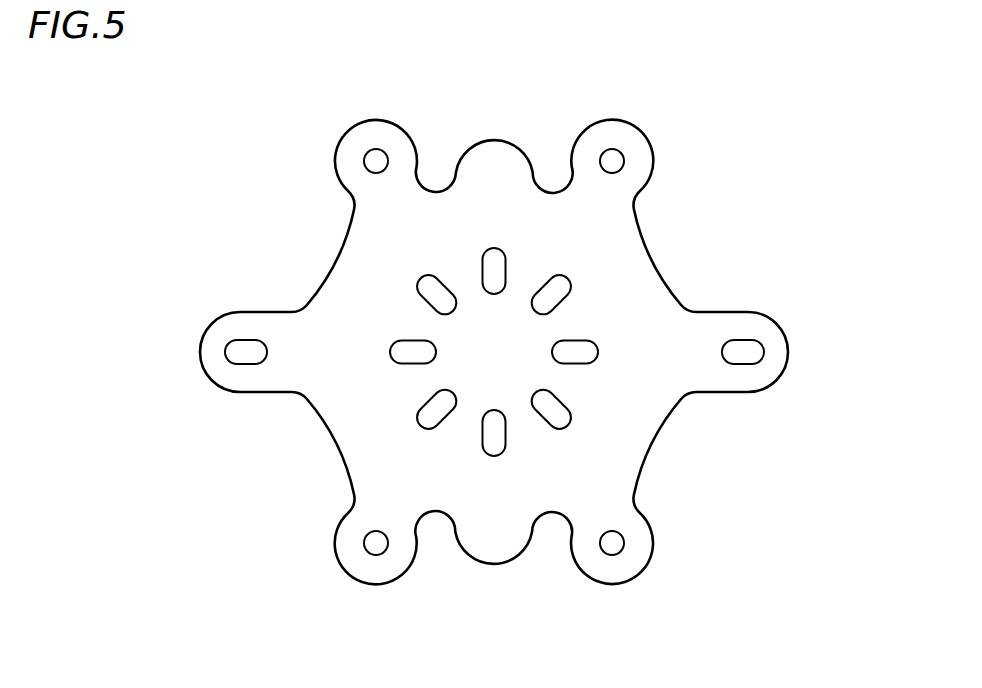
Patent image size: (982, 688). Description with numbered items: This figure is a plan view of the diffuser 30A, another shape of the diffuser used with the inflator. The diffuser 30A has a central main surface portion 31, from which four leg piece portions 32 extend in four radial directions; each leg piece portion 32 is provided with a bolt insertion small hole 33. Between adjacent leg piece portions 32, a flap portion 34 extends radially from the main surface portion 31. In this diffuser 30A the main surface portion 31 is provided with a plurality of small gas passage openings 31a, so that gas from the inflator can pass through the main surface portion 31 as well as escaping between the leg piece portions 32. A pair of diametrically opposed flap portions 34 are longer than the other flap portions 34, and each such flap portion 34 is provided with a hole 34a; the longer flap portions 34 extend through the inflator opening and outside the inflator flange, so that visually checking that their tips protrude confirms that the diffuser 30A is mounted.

The diffuser 30A is at (776, 206).
The main surface portion 31 is at (497, 370).
The small gas passage openings 31a is at (550, 295).
The leg piece portions 32 is at (346, 164).
The bolt insertion small hole 33 is at (377, 158).
The flap portion 34 is at (500, 153).
The hole 34a is at (243, 355).